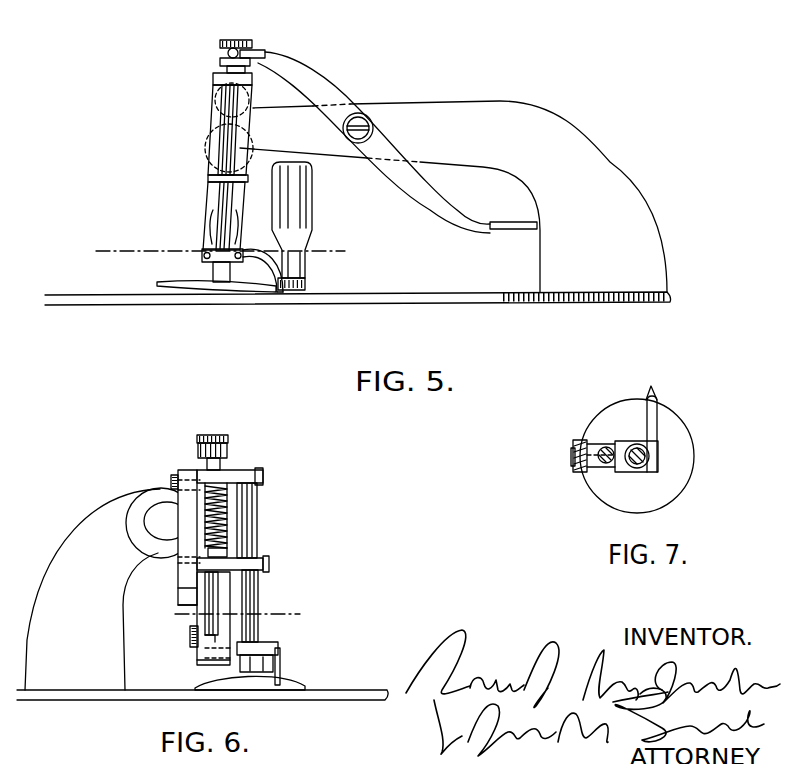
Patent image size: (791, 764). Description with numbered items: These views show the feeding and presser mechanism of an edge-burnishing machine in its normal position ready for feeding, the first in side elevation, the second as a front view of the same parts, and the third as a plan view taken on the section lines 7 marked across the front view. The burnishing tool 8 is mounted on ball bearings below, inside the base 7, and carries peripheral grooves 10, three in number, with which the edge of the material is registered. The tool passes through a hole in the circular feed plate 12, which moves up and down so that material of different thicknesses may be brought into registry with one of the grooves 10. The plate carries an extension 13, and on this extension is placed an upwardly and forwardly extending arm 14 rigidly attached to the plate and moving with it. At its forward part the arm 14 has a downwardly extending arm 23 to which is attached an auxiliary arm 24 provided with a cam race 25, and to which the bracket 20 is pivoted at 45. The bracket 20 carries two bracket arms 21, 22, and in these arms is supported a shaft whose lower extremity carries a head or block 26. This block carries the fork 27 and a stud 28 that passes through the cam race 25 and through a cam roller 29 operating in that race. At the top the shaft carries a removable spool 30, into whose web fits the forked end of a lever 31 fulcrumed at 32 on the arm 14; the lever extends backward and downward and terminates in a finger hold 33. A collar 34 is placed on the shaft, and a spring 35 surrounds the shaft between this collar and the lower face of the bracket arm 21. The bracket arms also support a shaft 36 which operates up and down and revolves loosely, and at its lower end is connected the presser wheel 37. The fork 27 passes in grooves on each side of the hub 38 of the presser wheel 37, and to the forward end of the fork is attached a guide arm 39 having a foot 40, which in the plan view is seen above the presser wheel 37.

In FIG. 5, the base 7 is at (223, 251).
In FIG. 6, the base 7 is at (237, 616).
In FIG. 5, the burnishing tool 8 is at (312, 235).
In FIG. 5, the peripheral grooves 10 is at (306, 291).
In FIG. 5, the feed plate 12 is at (114, 300).
In FIG. 6, the feed plate 12 is at (349, 689).
In FIG. 5, the extension 13 is at (668, 291).
In FIG. 5, the arm 14 is at (453, 196).
In FIG. 6, the arm 14 is at (92, 589).
In FIG. 5, the bracket 20 is at (215, 104).
In FIG. 6, the bracket 20 is at (200, 500).
In FIG. 5, the bracket arm 21 is at (213, 80).
In FIG. 6, the bracket arm 21 is at (264, 472).
In FIG. 5, the bracket arm 22 is at (209, 165).
In FIG. 6, the bracket arm 22 is at (269, 565).
In FIG. 5, the downwardly extending arm 23 is at (246, 98).
In FIG. 6, the downwardly extending arm 23 is at (152, 558).
In FIG. 5, the auxiliary arm 24 is at (207, 233).
In FIG. 6, the auxiliary arm 24 is at (197, 623).
In FIG. 5, the cam race 25 is at (216, 218).
In FIG. 6, the cam race 25 is at (179, 598).
In FIG. 7, the cam race 25 is at (605, 448).
In FIG. 6, the head or block 26 is at (204, 664).
In FIG. 7, the head or block 26 is at (584, 474).
In FIG. 6, the fork 27 is at (255, 648).
In FIG. 7, the fork 27 is at (620, 441).
In FIG. 6, the stud 28 is at (190, 646).
In FIG. 7, the stud 28 is at (573, 461).
In FIG. 5, the cam roller 29 is at (233, 238).
In FIG. 5, the removable spool 30 is at (238, 43).
In FIG. 6, the removable spool 30 is at (216, 436).
In FIG. 5, the lever 31 is at (316, 90).
In FIG. 5, the fulcrum 32 is at (366, 122).
In FIG. 5, the finger hold 33 is at (507, 222).
In FIG. 6, the collar 34 is at (227, 553).
In FIG. 6, the spring 35 is at (226, 512).
In FIG. 5, the shaft 36 is at (215, 180).
In FIG. 6, the shaft 36 is at (257, 525).
In FIG. 7, the shaft 36 is at (654, 454).
In FIG. 5, the presser wheel 37 is at (181, 279).
In FIG. 6, the presser wheel 37 is at (306, 678).
In FIG. 7, the presser wheel 37 is at (637, 456).
In FIG. 5, the hub 38 is at (210, 249).
In FIG. 6, the hub 38 is at (272, 643).
In FIG. 5, the guide arm 39 is at (268, 240).
In FIG. 6, the guide arm 39 is at (286, 656).
In FIG. 7, the guide arm 39 is at (658, 412).
In FIG. 5, the foot 40 is at (282, 293).
In FIG. 7, the foot 40 is at (653, 394).
In FIG. 6, the pivot 45 is at (178, 472).